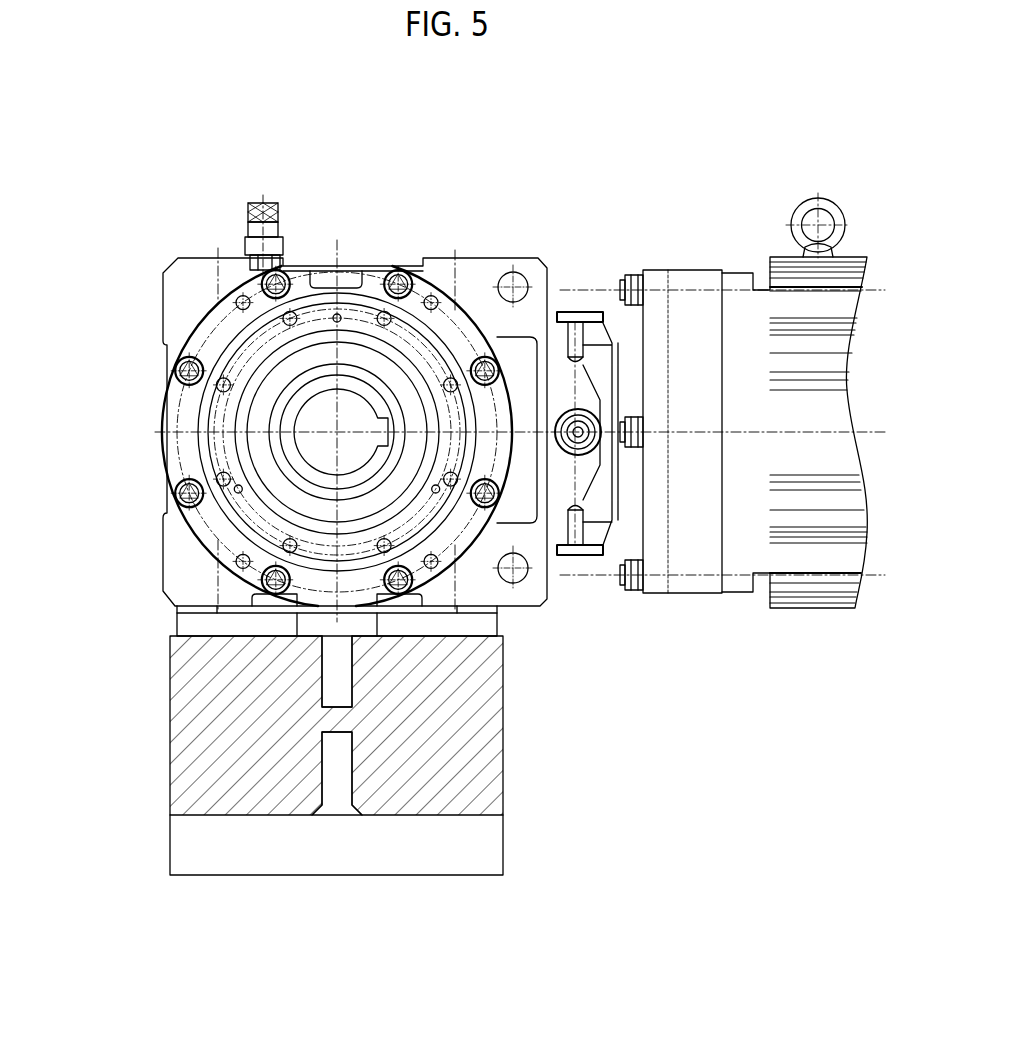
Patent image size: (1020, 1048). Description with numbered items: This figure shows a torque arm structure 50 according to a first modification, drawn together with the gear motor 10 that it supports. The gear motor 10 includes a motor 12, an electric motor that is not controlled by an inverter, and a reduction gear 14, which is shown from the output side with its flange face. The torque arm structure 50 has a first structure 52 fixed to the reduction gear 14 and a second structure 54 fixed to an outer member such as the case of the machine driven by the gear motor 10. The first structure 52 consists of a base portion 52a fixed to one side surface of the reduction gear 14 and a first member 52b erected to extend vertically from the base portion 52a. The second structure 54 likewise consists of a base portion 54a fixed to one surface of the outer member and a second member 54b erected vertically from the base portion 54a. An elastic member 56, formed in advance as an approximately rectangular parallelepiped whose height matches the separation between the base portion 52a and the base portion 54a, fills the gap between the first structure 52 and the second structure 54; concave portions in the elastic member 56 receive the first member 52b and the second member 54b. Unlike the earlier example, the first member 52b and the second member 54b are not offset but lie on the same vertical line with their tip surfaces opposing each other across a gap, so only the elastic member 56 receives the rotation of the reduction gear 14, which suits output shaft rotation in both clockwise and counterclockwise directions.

The gear motor 10 is at (677, 193).
The motor 12 is at (787, 273).
The reduction gear 14 is at (491, 278).
The torque arm structure 50 is at (692, 613).
The first structure 52 is at (97, 612).
The base portion 52a is at (193, 627).
The first member 52b is at (335, 668).
The second structure 54 is at (595, 752).
The base portion 54a is at (477, 847).
The second member 54b is at (340, 768).
The elastic member 56 is at (463, 700).